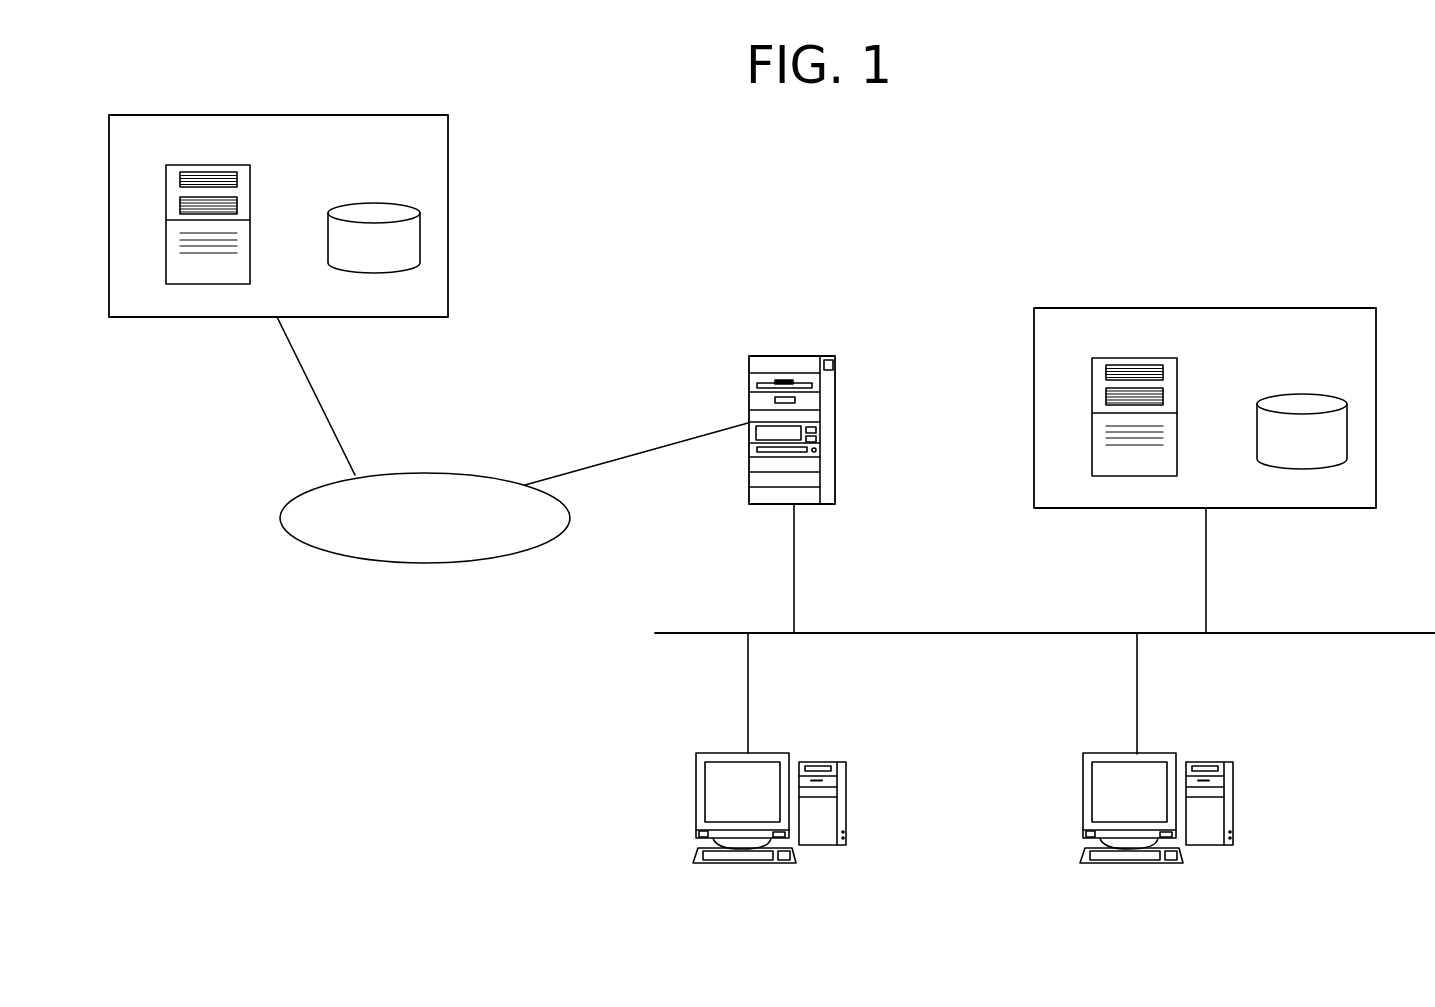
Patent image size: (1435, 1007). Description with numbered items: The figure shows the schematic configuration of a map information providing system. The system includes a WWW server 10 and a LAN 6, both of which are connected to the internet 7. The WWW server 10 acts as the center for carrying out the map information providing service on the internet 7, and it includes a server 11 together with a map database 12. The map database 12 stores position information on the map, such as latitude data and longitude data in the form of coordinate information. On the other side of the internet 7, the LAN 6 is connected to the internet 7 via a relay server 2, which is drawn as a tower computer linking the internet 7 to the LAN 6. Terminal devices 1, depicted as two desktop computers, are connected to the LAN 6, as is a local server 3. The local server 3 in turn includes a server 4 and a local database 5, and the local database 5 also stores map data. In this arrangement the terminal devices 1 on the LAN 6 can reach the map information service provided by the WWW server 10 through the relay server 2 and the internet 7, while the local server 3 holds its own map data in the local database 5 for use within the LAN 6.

The terminal device 1 is at (696, 795).
The relay server 2 is at (835, 395).
The local server 3 is at (1376, 398).
The server 4 is at (1177, 373).
The local database 5 is at (1313, 393).
The LAN 6 is at (944, 230).
The internet 7 is at (407, 563).
The WWW server 10 is at (448, 207).
The server 11 is at (250, 180).
The map database 12 is at (385, 203).